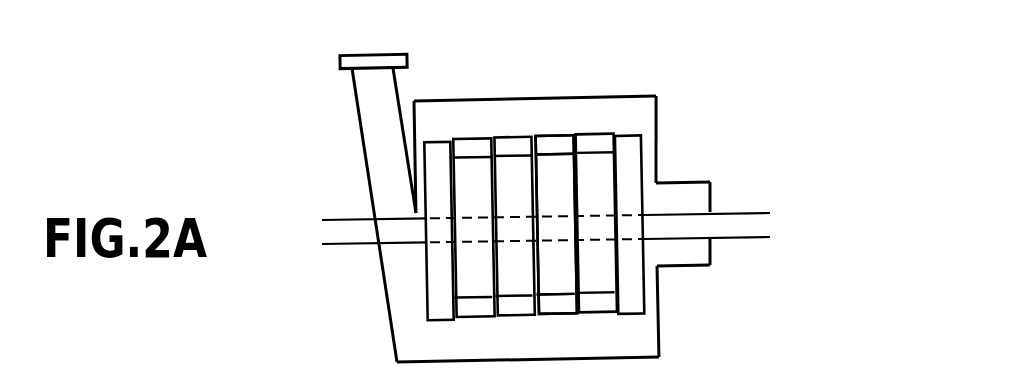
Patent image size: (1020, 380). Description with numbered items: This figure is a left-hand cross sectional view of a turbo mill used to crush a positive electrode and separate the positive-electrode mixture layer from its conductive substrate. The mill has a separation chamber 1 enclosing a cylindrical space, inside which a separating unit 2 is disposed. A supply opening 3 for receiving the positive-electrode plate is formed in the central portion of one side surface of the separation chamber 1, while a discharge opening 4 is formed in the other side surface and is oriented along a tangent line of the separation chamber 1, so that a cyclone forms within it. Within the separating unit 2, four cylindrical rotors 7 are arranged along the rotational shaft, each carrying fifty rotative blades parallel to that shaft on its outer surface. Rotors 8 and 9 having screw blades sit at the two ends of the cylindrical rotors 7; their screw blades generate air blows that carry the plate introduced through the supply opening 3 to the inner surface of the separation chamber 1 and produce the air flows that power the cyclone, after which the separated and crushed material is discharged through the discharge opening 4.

The separation chamber 1 is at (617, 114).
The separating unit 2 is at (475, 167).
The supply opening 3 is at (688, 205).
The discharge opening 4 is at (382, 141).
The cylindrical rotor 7 is at (552, 164).
The rotor having screw blades 8 is at (630, 171).
The rotor having screw blades 9 is at (442, 285).